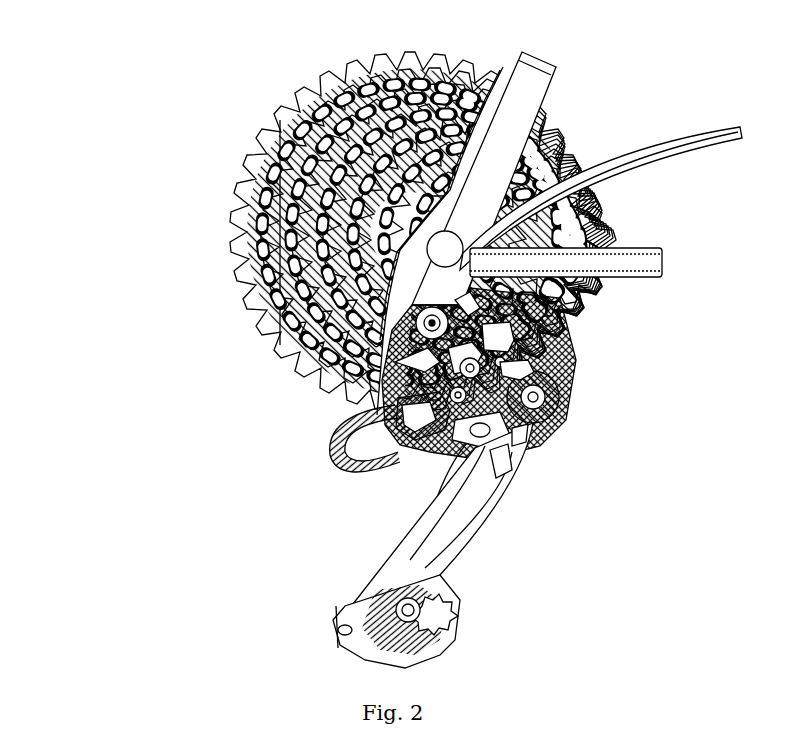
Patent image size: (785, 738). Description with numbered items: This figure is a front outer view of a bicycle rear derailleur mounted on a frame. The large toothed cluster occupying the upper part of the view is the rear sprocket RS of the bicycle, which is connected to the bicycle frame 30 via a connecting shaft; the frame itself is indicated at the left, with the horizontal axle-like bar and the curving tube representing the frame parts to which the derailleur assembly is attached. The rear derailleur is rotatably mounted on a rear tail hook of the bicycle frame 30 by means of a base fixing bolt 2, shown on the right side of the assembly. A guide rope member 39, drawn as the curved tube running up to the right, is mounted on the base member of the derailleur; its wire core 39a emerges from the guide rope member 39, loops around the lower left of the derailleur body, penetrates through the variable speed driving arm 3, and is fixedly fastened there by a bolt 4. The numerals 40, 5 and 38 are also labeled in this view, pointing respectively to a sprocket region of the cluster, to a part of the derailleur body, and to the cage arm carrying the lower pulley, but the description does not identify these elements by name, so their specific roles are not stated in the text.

The rear sprocket RS is at (282, 103).
The bicycle frame 30 is at (253, 237).
The second rear sprocket 40 is at (276, 336).
The guide rope member 39 is at (667, 139).
The wire core 39a is at (338, 418).
The base fixing bolt 2 is at (545, 310).
The variable speed driving arm 3 is at (328, 472).
The bolt 4 is at (420, 465).
The derailleur link member 5 is at (363, 474).
The chain guide cage 38 is at (513, 519).